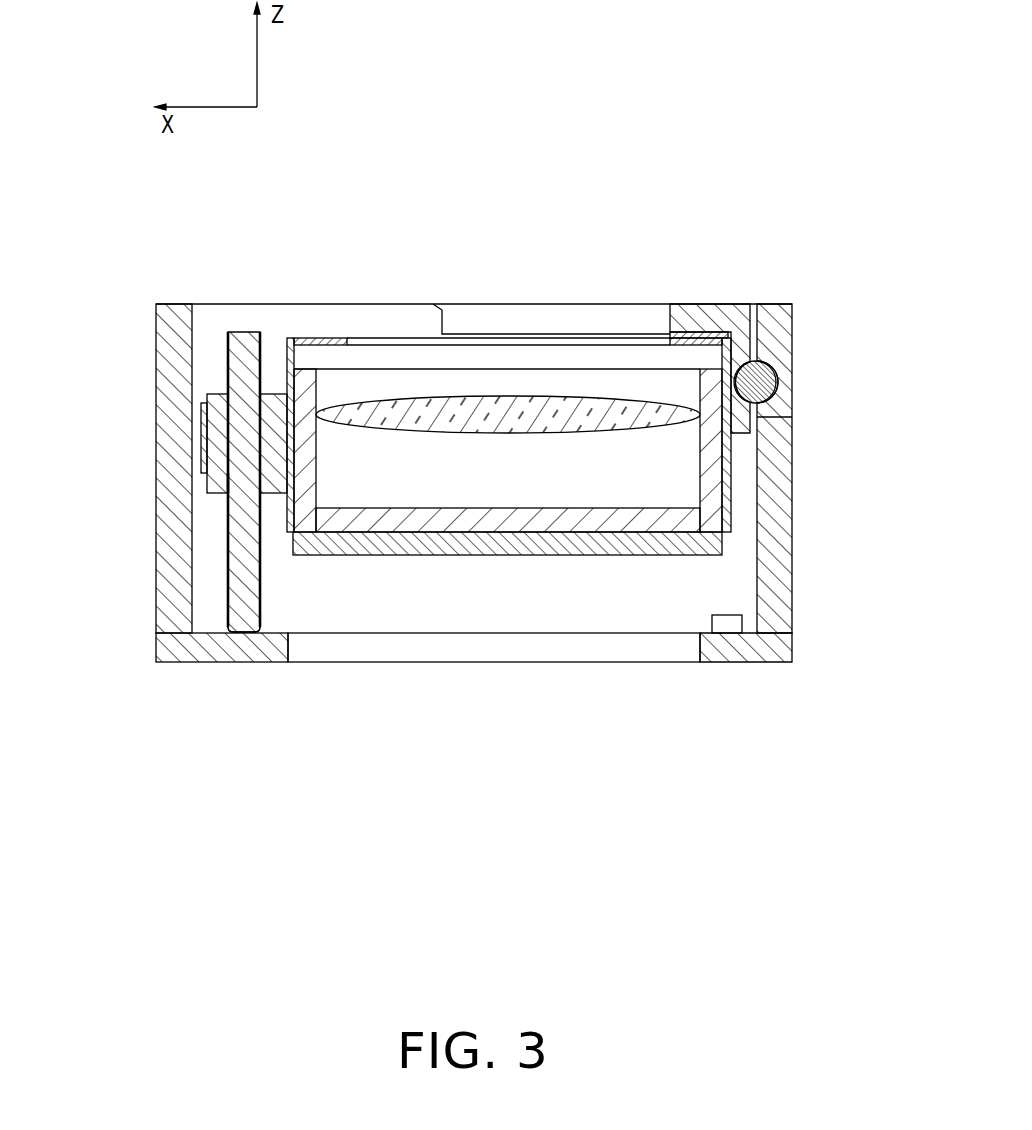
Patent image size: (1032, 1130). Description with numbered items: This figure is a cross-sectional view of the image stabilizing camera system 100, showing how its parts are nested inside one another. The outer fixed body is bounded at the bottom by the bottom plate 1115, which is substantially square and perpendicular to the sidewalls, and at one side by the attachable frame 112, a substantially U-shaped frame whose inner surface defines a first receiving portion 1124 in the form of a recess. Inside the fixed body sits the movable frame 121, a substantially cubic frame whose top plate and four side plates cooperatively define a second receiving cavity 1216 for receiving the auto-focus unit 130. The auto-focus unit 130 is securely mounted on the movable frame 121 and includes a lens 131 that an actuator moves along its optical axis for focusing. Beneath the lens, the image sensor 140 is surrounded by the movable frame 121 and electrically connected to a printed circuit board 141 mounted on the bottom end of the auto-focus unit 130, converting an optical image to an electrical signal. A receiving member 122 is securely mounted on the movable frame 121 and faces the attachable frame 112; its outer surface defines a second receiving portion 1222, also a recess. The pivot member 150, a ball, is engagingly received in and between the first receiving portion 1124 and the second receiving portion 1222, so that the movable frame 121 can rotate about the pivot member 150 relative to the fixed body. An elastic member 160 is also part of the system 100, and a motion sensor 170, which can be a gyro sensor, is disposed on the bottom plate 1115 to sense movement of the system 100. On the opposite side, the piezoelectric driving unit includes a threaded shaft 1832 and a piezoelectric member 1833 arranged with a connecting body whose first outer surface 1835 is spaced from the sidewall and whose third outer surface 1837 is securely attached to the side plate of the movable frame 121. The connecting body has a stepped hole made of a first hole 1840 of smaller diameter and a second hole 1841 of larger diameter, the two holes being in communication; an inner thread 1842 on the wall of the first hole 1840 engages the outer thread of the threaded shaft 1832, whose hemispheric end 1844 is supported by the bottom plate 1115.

The image stabilizing camera system 100 is at (145, 328).
The attachable frame 112 is at (785, 328).
The bottom plate 1115 is at (240, 650).
The first receiving portion 1124 is at (773, 368).
The movable frame 121 is at (724, 453).
The second receiving cavity 1216 is at (317, 363).
The receiving member 122 is at (736, 328).
The second receiving portion 1222 is at (763, 390).
The auto-focus (AF) unit 130 is at (712, 380).
The lens 131 is at (572, 405).
The image sensor 140 is at (658, 522).
The printed circuit board 141 is at (520, 547).
The pivot member 150 is at (767, 371).
The elastic member 160 is at (670, 334).
The motion sensor 170 is at (727, 627).
The threaded shaft 1832 is at (172, 508).
The piezoelectric member 1833 is at (204, 423).
The first outer surface 1835 is at (212, 463).
The third outer surface 1837 is at (270, 387).
The first hole 1840 is at (228, 483).
The second hole 1841 is at (194, 485).
The inner thread 1842 is at (230, 573).
The hemispheric end 1844 is at (242, 627).